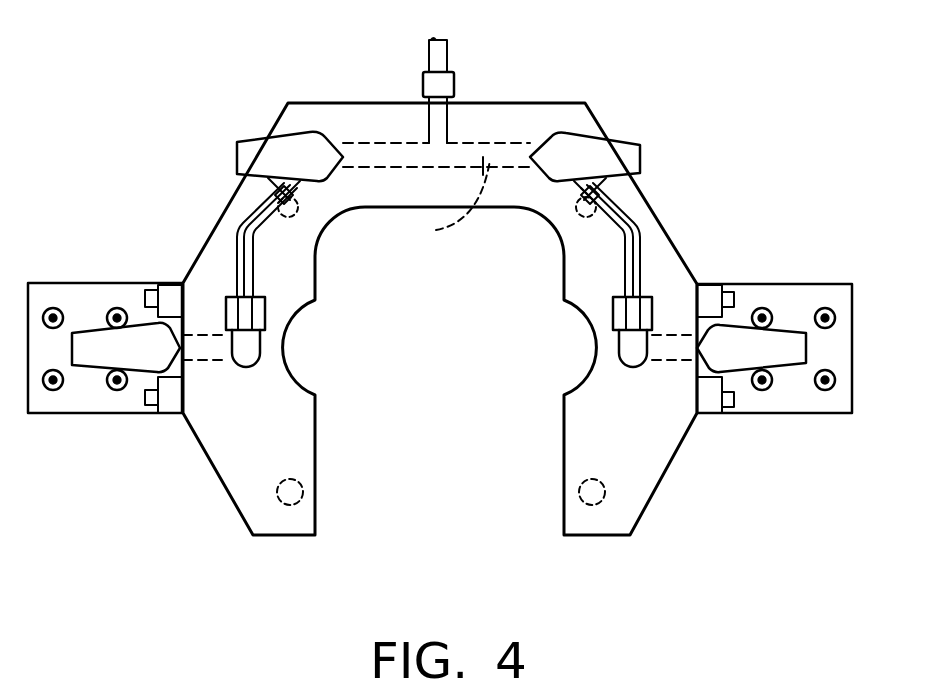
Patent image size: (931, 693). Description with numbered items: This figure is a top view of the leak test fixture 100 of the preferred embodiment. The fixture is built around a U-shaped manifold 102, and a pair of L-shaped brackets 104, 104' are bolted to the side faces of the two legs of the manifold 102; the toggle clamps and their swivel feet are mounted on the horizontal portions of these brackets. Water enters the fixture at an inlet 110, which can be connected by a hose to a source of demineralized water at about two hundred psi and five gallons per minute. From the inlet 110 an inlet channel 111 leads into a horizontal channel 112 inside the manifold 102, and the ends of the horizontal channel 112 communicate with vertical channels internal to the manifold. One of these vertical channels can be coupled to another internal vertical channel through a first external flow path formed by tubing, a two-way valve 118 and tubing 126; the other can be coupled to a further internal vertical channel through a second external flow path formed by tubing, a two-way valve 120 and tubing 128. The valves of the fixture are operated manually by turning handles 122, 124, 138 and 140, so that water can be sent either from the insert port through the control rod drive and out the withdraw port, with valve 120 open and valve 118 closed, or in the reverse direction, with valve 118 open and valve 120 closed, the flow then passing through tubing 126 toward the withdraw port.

The clamp assembly 100 is at (708, 100).
The U-shaped manifold 102 is at (645, 192).
The L-shaped bracket 104 is at (127, 319).
The L-shaped bracket 104' is at (752, 317).
The inlet 110 is at (447, 52).
The inlet channel 111 is at (437, 127).
The horizontal channel 112 is at (440, 200).
The two-way valve 118 is at (316, 212).
The two-way valve 120 is at (562, 212).
The handle 122 is at (249, 140).
The handle 124 is at (617, 140).
The tubing 126 is at (255, 262).
The tubing 128 is at (643, 253).
The handle 138 is at (88, 357).
The handle 140 is at (737, 358).